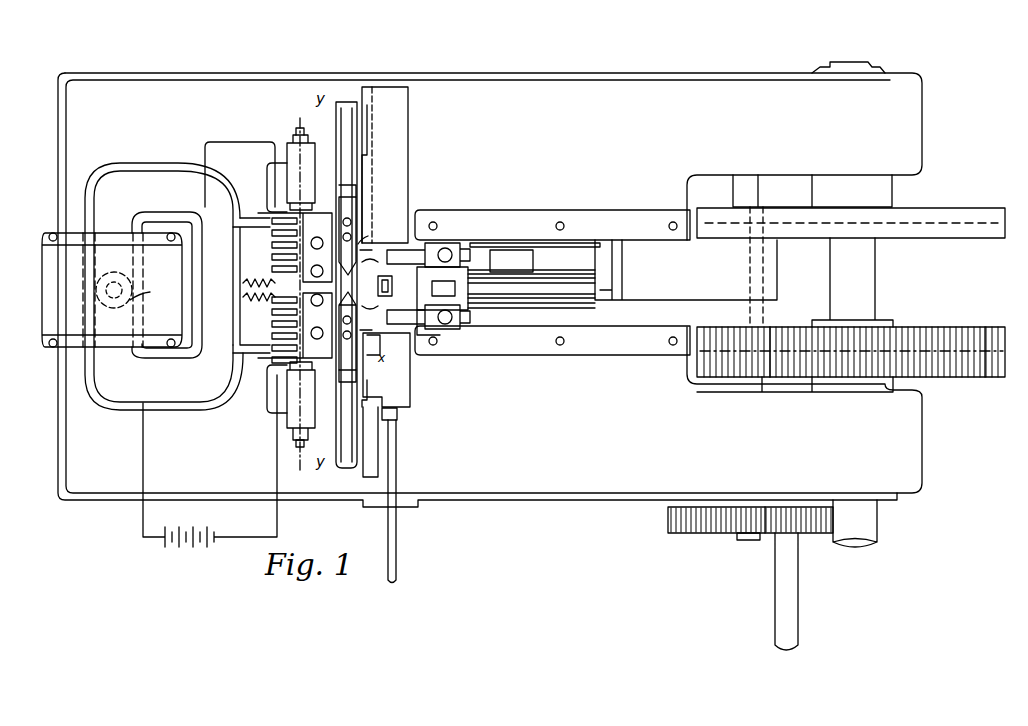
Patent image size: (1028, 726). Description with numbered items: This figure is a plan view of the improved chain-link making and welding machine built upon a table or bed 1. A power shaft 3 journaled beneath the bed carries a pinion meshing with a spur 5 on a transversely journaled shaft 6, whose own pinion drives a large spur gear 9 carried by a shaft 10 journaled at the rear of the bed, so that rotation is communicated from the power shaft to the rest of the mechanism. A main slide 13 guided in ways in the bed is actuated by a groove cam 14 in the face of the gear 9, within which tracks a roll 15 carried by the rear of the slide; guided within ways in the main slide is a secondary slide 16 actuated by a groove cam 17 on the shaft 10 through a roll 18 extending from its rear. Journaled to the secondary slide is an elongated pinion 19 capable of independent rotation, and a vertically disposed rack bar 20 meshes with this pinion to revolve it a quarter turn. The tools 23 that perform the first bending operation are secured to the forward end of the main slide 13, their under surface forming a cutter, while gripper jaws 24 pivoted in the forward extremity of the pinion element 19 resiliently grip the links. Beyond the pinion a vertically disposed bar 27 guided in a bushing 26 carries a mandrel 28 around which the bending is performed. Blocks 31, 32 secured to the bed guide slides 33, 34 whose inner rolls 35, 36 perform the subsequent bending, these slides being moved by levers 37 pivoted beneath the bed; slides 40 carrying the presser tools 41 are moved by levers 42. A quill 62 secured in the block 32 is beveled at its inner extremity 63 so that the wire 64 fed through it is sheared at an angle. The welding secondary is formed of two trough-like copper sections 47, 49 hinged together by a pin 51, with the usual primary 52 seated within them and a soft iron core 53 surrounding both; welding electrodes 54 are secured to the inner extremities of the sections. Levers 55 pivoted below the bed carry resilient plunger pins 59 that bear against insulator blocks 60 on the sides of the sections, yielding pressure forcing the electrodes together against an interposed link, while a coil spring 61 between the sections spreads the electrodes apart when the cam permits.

The table or bed 1 is at (490, 284).
The power shaft 3 is at (798, 560).
The spur 5 is at (666, 520).
The transversely journaled shaft 6 is at (745, 540).
The large spur gear 9 is at (976, 376).
The shaft 10 is at (830, 276).
The main slide 13 is at (552, 332).
The groove cam 14 is at (945, 328).
The roll 15 is at (778, 328).
The secondary slide 16 is at (604, 245).
The groove cam 17 is at (962, 230).
The roll 18 is at (770, 230).
The elongated pinion 19 is at (574, 300).
The rack bar 20 is at (518, 256).
The tools 23 is at (440, 246).
The gripper jaws 24 is at (408, 290).
The bushing 26 is at (372, 263).
The vertically disposed bar 27 is at (373, 308).
The mandrel 28 is at (376, 289).
The block 31 is at (410, 100).
The block 32 is at (412, 393).
The slide 33 is at (357, 101).
The slide 34 is at (380, 454).
The roll 35 is at (366, 238).
The roll 36 is at (378, 351).
The levers 37 is at (368, 152).
The slides 40 is at (347, 283).
The presser tools 41 is at (368, 242).
The levers 42 is at (378, 377).
The secondary section 47 is at (172, 412).
The secondary section 49 is at (148, 164).
The pin 51 is at (96, 287).
The primary 52 is at (201, 288).
The soft iron core 53 is at (112, 290).
The welding electrodes 54 is at (330, 273).
The levers 55 is at (301, 294).
The resilient plunger pins 59 is at (298, 134).
The insulator blocks 60 is at (290, 205).
The coil spring 61 is at (242, 289).
The quill 62 is at (399, 414).
The beveled inner extremity 63 is at (422, 333).
The wire 64 is at (408, 501).